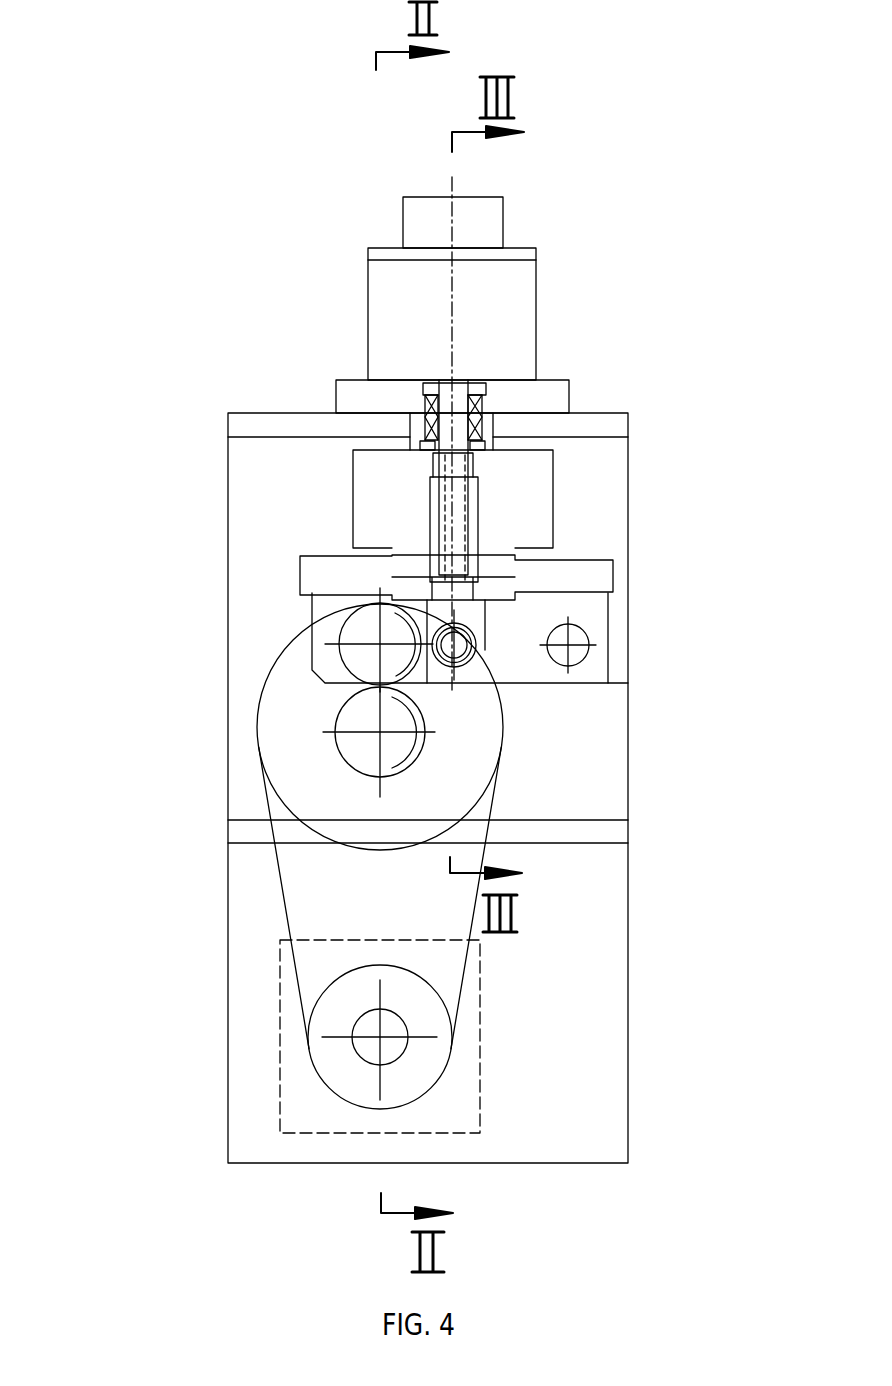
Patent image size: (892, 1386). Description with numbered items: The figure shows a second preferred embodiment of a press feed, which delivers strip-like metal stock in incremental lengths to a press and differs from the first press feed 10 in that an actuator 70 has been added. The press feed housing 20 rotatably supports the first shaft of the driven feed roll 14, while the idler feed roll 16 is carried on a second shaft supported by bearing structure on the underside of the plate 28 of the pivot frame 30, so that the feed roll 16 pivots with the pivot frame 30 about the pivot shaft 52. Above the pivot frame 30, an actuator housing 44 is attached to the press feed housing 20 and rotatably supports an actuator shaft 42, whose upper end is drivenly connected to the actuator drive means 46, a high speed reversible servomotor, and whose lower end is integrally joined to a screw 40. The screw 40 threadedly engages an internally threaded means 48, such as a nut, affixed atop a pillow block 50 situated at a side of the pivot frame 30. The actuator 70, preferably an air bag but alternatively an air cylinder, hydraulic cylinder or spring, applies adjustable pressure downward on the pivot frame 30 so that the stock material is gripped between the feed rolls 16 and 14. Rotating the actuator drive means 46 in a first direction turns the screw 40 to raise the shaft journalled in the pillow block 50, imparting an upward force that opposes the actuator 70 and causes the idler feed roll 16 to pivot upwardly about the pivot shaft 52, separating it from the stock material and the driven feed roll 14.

The press feed 10 is at (630, 882).
The feed roll 14 is at (333, 725).
The feed roll 16 is at (335, 645).
The press feed housing 20 is at (630, 778).
The plate 28 is at (615, 577).
The pivot frame 30 is at (606, 622).
The screw 40 is at (472, 490).
The actuator shaft 42 is at (480, 393).
The actuator housing 44 is at (570, 395).
The actuator drive means 46 is at (537, 313).
The internally threaded means 48 is at (483, 525).
The pillow block 50 is at (447, 637).
The pivot shaft 52 is at (588, 647).
The actuator 70 is at (555, 495).